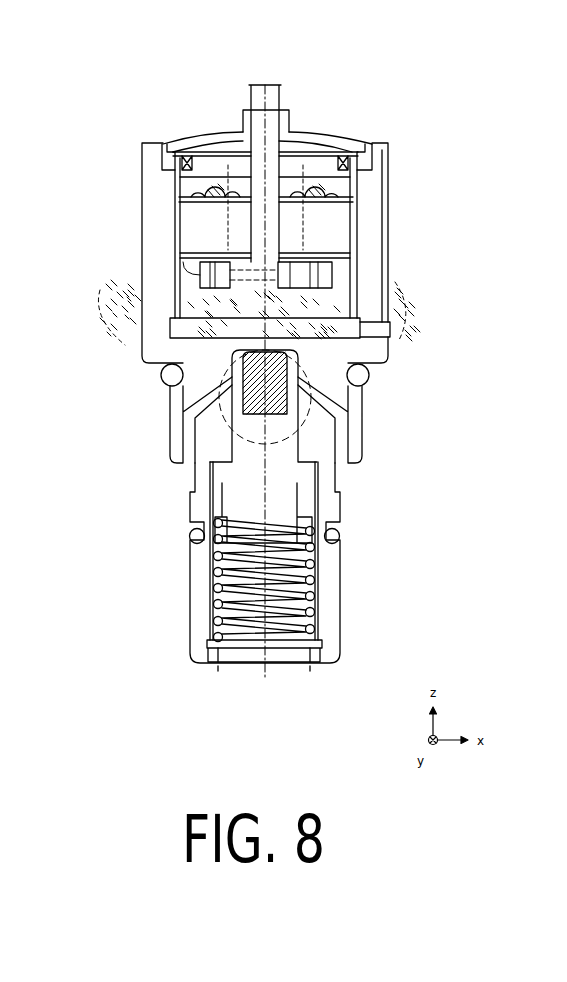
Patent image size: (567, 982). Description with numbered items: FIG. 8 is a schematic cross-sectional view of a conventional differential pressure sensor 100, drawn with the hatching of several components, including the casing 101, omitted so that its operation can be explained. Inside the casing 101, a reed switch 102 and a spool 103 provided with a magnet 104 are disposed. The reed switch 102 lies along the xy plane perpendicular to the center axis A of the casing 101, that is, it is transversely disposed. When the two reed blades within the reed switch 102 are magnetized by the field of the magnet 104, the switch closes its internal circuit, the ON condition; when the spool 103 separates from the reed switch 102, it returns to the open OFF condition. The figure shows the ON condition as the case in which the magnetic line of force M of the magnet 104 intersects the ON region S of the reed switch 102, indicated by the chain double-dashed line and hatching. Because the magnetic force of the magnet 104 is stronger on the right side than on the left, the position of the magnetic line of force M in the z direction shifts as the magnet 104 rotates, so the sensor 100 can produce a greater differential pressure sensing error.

The differential pressure sensor 100 is at (427, 82).
The casing 101 is at (378, 183).
The reed switch 102 is at (197, 262).
The spool 103 is at (166, 573).
The magnet 104 is at (128, 478).
The center axis A is at (268, 122).
The ON region S is at (392, 346).
The magnetic line of force M is at (312, 428).